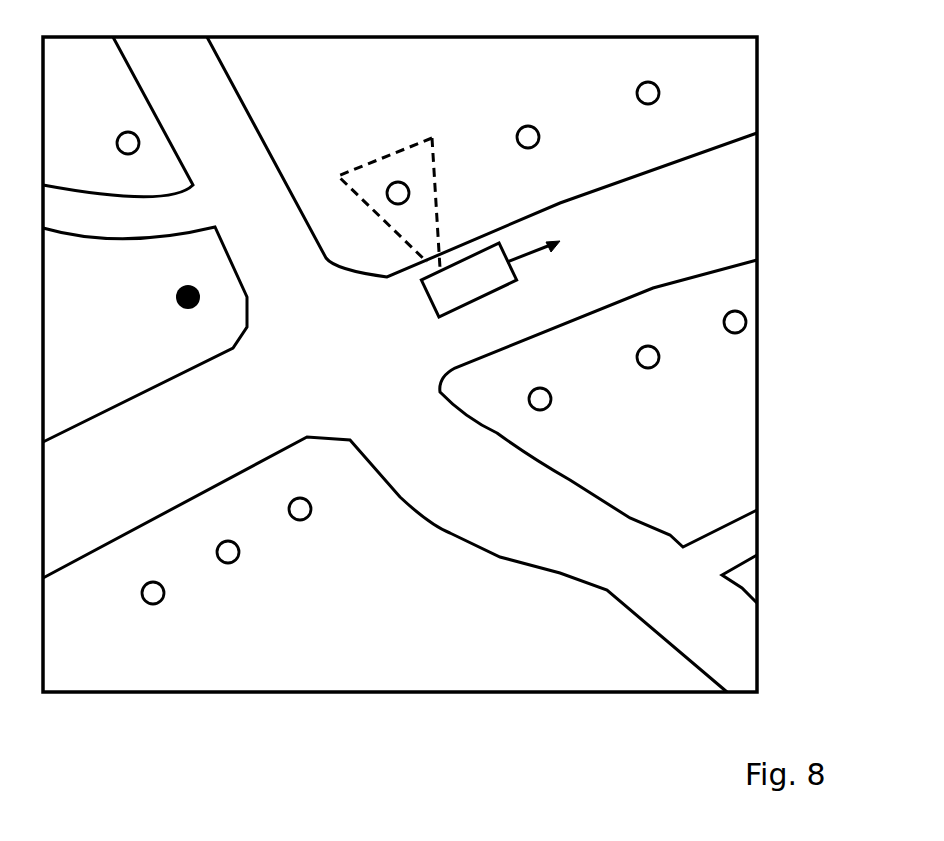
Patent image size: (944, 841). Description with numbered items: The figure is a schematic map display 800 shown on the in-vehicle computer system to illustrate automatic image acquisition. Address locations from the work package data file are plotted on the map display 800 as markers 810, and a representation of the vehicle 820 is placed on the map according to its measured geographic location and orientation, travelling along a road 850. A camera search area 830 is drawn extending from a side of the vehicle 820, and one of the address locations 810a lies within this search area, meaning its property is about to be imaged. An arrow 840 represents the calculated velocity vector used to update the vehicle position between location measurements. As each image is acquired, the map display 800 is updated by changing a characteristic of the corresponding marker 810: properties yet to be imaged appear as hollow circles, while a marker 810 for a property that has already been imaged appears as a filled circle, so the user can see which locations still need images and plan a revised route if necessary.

The map display 800 is at (757, 90).
The marker 810 is at (177, 293).
The address location 810a is at (387, 185).
The vehicle 820 is at (428, 298).
The camera search area 830 is at (433, 139).
The arrow 840 is at (540, 260).
The road 850 is at (315, 394).